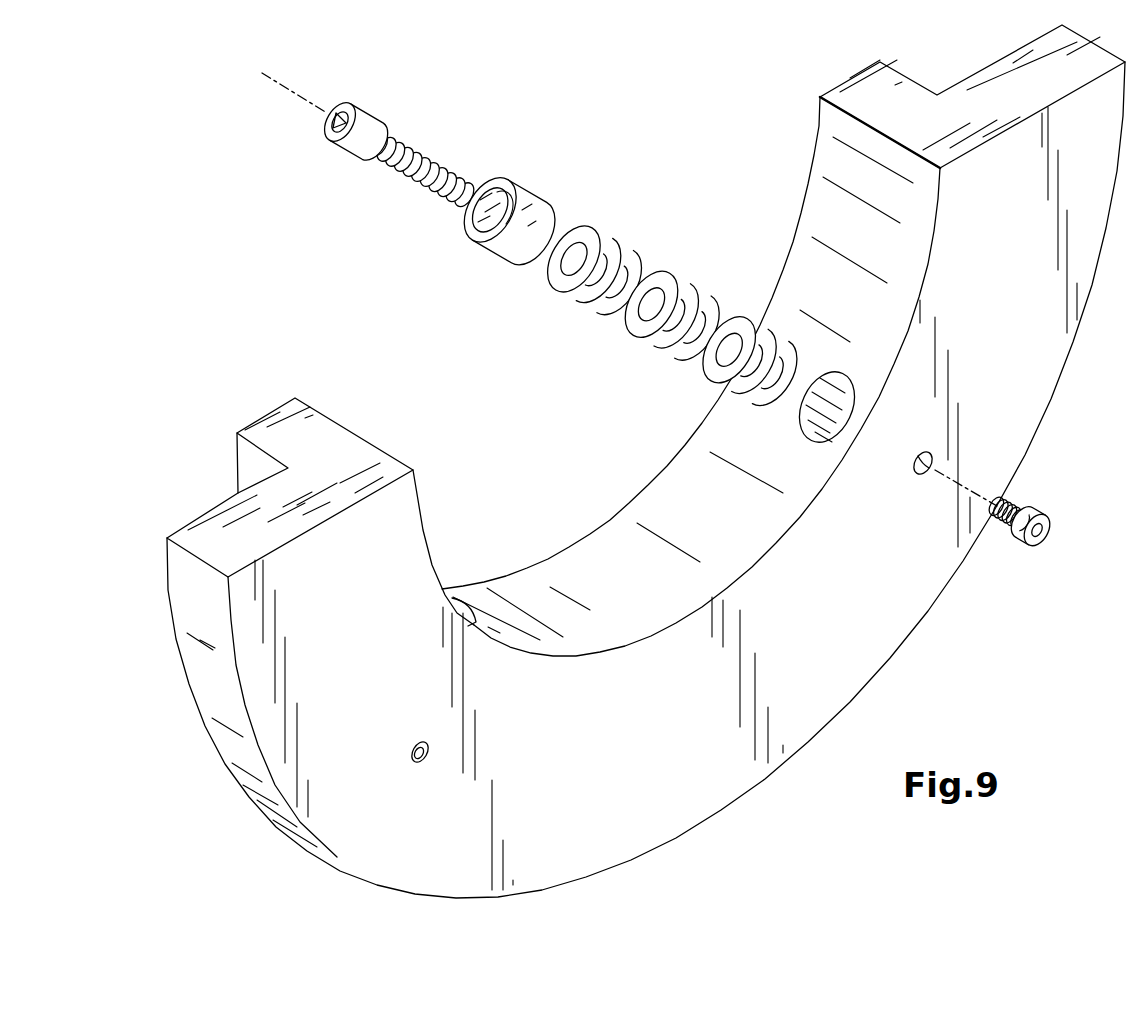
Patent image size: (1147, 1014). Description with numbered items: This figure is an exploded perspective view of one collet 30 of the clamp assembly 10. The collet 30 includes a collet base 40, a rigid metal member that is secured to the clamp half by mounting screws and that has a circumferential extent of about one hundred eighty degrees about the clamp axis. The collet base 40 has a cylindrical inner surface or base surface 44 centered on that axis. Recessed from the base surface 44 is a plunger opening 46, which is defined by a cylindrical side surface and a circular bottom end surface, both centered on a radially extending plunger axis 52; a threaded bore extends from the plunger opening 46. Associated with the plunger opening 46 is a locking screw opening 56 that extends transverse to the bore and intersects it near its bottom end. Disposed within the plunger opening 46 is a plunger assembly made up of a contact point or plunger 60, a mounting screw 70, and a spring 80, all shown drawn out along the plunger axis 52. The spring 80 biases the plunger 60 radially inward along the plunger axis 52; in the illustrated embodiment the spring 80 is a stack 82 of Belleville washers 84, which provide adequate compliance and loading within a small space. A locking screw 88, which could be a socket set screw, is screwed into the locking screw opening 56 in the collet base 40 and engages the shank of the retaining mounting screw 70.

The clamp assembly 10 is at (646, 462).
The collet 30 is at (948, 673).
The collet base 40 is at (715, 814).
The base surface 44 is at (603, 560).
The plunger opening 46 is at (834, 390).
The plunger axis 52 is at (300, 90).
The locking screw opening 56 is at (918, 475).
The plunger 60 is at (527, 187).
The mounting screw 70 is at (424, 138).
The spring 80 is at (667, 282).
The stack 82 is at (640, 255).
The Belleville washers 84 is at (757, 325).
The locking screw 88 is at (1048, 520).